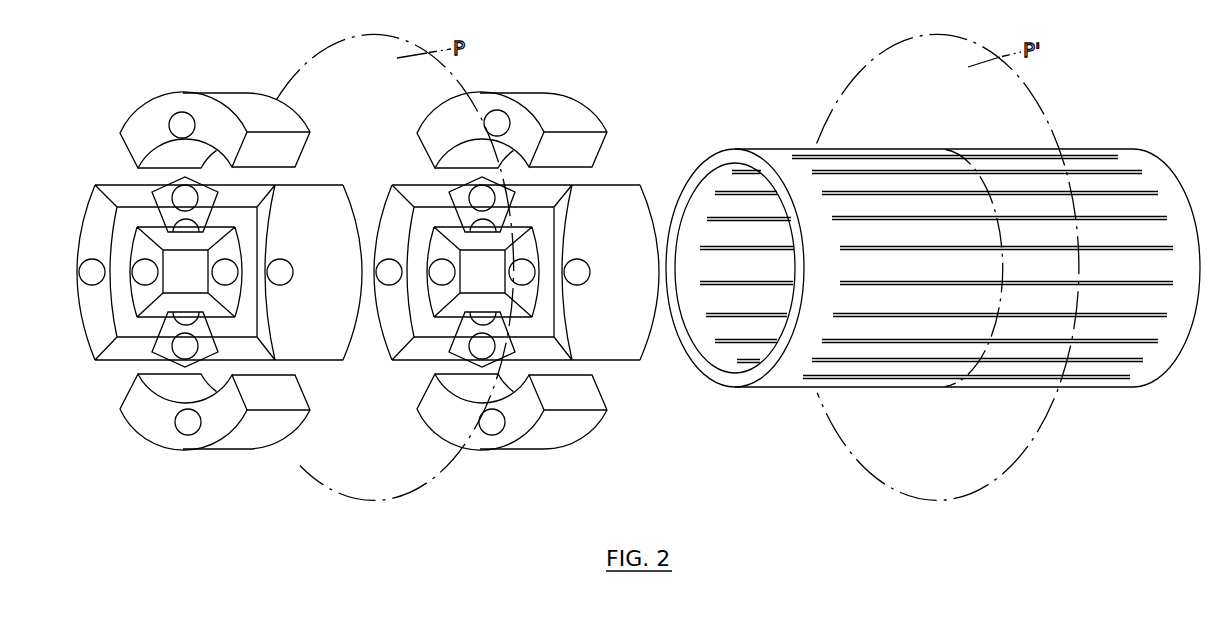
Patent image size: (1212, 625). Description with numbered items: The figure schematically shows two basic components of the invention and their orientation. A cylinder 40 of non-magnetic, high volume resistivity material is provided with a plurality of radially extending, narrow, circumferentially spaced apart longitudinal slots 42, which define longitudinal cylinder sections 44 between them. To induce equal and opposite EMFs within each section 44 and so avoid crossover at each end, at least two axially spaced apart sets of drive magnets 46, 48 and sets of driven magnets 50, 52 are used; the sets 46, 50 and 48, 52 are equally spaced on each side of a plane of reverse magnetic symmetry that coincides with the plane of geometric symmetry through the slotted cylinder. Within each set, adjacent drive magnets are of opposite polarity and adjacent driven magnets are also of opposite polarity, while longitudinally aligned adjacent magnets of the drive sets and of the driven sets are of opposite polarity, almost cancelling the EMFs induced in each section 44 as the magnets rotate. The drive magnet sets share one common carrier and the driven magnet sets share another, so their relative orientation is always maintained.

The cylinder 40 is at (790, 125).
The longitudinal slots 42 is at (927, 200).
The longitudinal cylinder sections 44 is at (1035, 200).
The set of drive magnets 46 is at (233, 440).
The set of drive magnets 48 is at (545, 450).
The set of driven magnets 50 is at (259, 183).
The set of driven magnets 52 is at (557, 182).